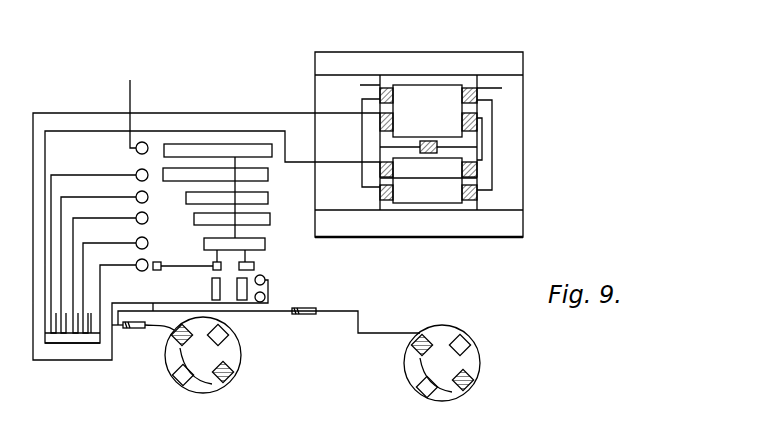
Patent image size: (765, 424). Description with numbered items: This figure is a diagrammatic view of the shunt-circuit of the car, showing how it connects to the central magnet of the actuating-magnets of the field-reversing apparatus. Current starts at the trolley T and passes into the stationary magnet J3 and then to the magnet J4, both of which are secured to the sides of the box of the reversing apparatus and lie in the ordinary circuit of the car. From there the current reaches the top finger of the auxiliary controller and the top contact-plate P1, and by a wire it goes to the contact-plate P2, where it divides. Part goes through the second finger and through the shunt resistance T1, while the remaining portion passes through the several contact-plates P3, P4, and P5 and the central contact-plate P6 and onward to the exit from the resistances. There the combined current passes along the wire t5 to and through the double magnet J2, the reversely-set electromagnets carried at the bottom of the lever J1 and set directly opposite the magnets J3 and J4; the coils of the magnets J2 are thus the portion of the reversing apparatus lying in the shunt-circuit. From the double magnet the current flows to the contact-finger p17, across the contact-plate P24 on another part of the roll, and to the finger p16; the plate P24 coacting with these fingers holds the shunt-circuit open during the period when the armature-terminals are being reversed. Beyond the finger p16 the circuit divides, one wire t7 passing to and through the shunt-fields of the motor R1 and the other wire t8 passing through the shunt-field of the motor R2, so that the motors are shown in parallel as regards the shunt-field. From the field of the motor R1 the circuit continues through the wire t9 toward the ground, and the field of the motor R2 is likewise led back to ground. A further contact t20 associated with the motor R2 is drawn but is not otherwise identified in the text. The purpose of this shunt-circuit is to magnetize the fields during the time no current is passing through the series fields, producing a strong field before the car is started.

The trolley T is at (130, 107).
The wire t9 is at (70, 175).
The top contact-plate P1 is at (211, 147).
The contact-plate P2 is at (268, 176).
The contact-plate P3 is at (268, 199).
The contact-plate P4 is at (270, 220).
The contact-plate P5 is at (265, 245).
The contact-plate P6 is at (254, 266).
The contact-finger p16 is at (265, 280).
The contact-finger p17 is at (266, 297).
The contact-plate P24 is at (243, 300).
The shunt resistance T1 is at (67, 338).
The wire t5 is at (92, 347).
The wire t7 is at (155, 328).
The motor R1 is at (228, 348).
The wire t8 is at (358, 334).
The motor R2 is at (476, 356).
The contact t20 is at (473, 391).
The lever J1 is at (437, 148).
The reversely-set electromagnets J2 is at (403, 140).
The electromagnet J3 is at (417, 83).
The electromagnet J4 is at (422, 210).